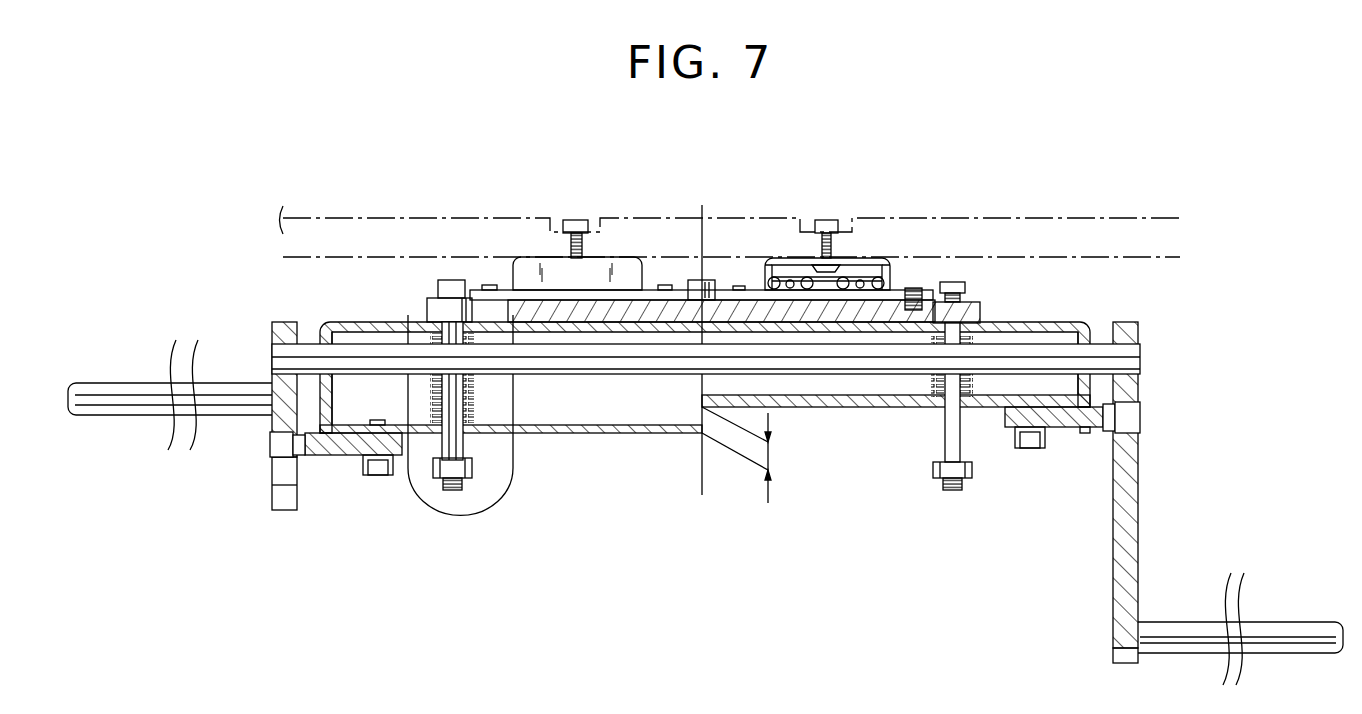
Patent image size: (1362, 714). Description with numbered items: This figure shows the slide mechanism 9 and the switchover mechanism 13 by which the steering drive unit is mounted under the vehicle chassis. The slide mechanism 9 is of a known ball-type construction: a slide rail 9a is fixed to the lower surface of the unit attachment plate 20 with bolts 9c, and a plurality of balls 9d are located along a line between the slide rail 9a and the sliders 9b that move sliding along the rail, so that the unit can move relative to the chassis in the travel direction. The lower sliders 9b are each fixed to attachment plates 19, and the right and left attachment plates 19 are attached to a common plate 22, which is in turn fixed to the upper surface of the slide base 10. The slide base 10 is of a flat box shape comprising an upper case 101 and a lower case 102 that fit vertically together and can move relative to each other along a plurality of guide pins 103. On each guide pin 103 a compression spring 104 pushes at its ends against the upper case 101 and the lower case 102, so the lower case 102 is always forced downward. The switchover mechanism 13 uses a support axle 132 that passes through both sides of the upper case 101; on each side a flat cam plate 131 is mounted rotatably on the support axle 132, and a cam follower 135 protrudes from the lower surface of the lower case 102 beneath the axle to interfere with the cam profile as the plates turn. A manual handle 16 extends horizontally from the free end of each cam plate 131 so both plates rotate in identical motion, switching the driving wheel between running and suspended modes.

The slide mechanism 9 is at (715, 287).
The slide rail 9a is at (785, 260).
The sliders 9b is at (795, 292).
The bolts 9c is at (587, 248).
The balls 9d is at (843, 277).
The slide base 10 is at (1092, 307).
The switchover mechanism 13 is at (263, 305).
The manual handle 16 is at (122, 395).
The attachment plates 19 is at (498, 293).
The unit attachment plate 20 is at (985, 232).
The common plate 22 is at (640, 305).
The upper case 101 is at (378, 322).
The lower case 102 is at (624, 435).
The guide pins 103 is at (443, 445).
The compression spring 104 is at (470, 407).
The cam plate 131 is at (290, 322).
The support axle 132 is at (280, 352).
The cam follower 135 is at (275, 447).